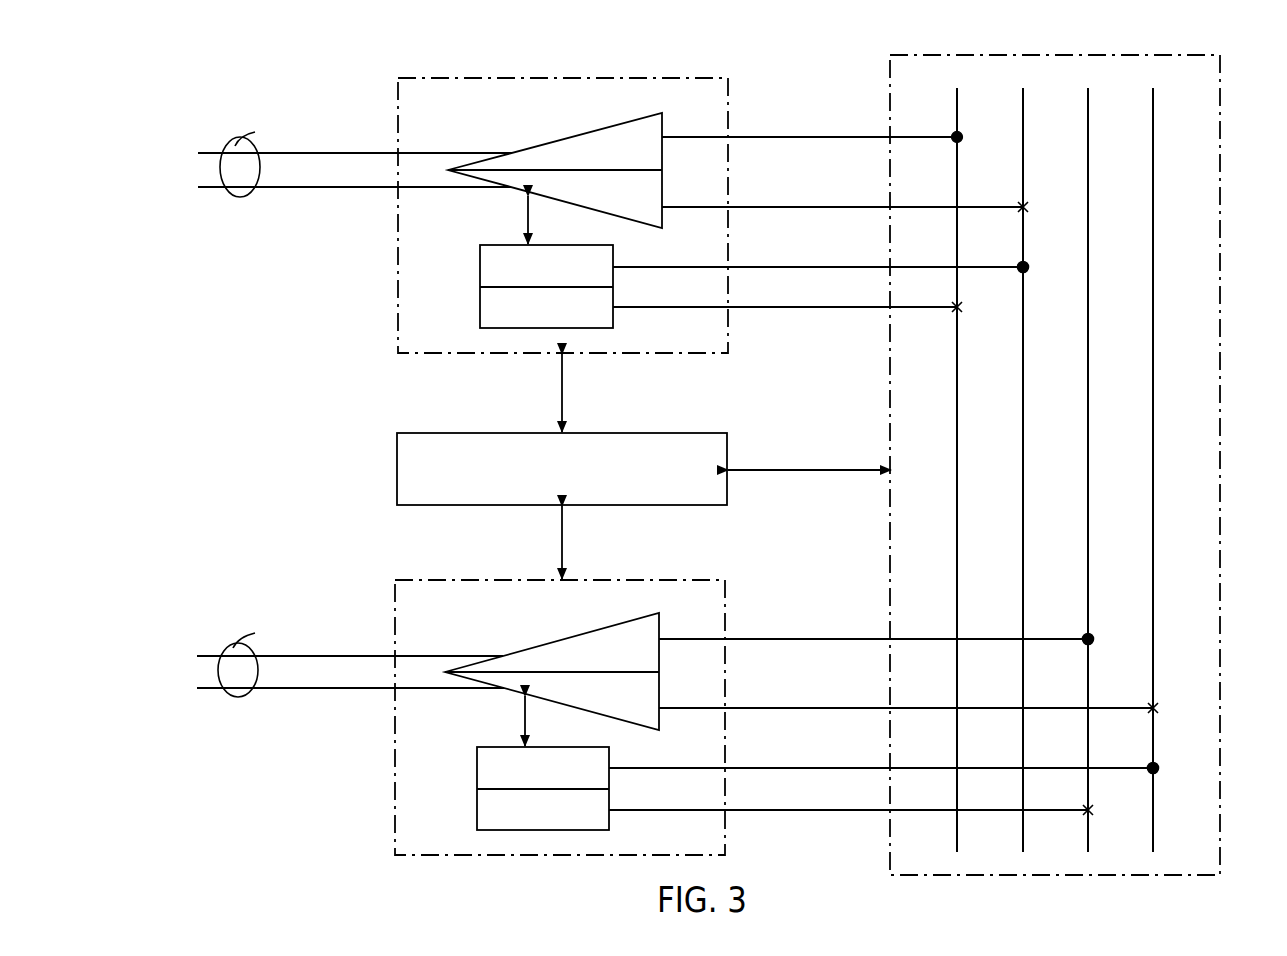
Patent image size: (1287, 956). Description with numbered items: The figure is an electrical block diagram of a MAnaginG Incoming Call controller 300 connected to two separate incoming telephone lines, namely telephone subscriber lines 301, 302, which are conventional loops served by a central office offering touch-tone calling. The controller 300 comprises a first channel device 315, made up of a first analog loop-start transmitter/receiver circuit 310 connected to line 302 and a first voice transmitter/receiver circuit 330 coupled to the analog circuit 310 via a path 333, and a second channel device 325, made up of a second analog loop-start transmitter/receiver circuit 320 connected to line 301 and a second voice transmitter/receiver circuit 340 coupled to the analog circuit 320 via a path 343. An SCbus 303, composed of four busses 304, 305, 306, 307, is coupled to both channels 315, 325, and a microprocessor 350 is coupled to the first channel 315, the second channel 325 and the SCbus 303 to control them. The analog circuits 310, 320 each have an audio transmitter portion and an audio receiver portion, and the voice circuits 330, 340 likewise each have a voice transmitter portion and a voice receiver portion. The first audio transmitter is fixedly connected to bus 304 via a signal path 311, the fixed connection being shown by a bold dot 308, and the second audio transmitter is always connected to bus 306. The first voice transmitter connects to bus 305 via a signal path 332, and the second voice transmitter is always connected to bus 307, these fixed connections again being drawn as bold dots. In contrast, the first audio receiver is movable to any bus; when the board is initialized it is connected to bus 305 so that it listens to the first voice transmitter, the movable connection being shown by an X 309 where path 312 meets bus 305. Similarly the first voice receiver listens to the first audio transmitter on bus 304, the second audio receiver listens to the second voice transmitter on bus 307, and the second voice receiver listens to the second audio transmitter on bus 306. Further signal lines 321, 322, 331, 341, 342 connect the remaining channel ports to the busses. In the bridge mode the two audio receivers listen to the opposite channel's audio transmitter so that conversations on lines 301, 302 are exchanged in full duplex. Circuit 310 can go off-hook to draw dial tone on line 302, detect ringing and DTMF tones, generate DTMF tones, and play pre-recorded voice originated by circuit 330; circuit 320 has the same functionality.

The MAGIC controller 300 is at (713, 49).
The telephone subscriber line 301 is at (350, 633).
The telephone subscriber line 302 is at (355, 144).
The SCbus 303 is at (1221, 137).
The bus 304 is at (956, 403).
The bus 305 is at (1022, 441).
The bus 306 is at (1087, 478).
The bus 307 is at (1152, 503).
The dot 308 is at (964, 138).
The X 309 is at (1030, 208).
The first analog loop-start transmitter/receiver circuit 310 is at (580, 133).
The signal path 311 is at (792, 137).
The path 312 is at (792, 207).
The first channel device 315 is at (503, 353).
The second analog loop-start transmitter/receiver circuit 320 is at (567, 637).
The audio transmit line 321 is at (783, 639).
The audio receive line 322 is at (783, 708).
The second channel device 325 is at (505, 580).
The first voice transmitter/receiver circuit 330 is at (512, 245).
The voice transmit line 331 is at (790, 267).
The signal path 332 is at (790, 307).
The path 333 is at (531, 222).
The second voice transmitter/receiver circuit 340 is at (513, 747).
The voice transmit line 341 is at (783, 768).
The voice receive line 342 is at (783, 810).
The path 343 is at (528, 722).
The microprocessor 350 is at (593, 433).